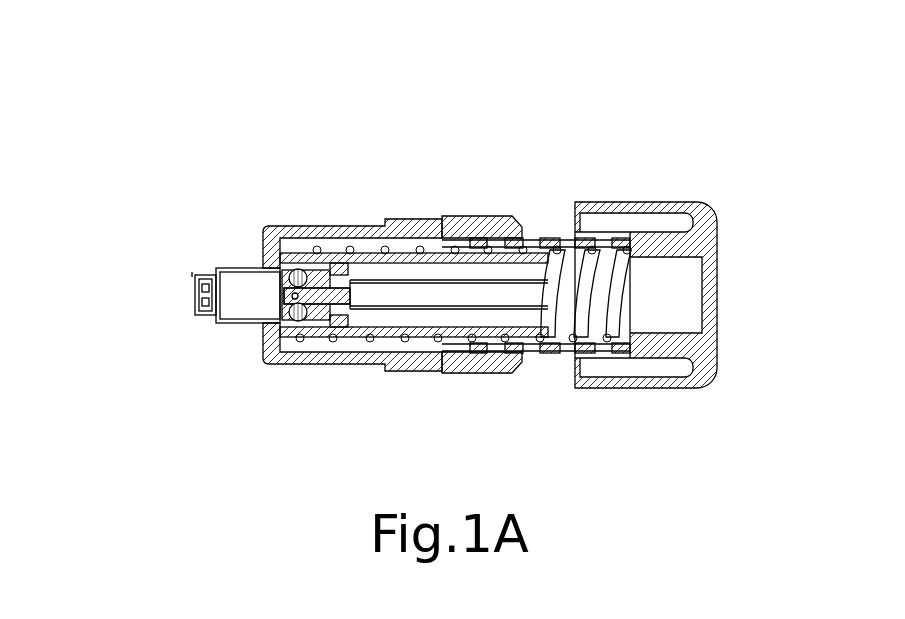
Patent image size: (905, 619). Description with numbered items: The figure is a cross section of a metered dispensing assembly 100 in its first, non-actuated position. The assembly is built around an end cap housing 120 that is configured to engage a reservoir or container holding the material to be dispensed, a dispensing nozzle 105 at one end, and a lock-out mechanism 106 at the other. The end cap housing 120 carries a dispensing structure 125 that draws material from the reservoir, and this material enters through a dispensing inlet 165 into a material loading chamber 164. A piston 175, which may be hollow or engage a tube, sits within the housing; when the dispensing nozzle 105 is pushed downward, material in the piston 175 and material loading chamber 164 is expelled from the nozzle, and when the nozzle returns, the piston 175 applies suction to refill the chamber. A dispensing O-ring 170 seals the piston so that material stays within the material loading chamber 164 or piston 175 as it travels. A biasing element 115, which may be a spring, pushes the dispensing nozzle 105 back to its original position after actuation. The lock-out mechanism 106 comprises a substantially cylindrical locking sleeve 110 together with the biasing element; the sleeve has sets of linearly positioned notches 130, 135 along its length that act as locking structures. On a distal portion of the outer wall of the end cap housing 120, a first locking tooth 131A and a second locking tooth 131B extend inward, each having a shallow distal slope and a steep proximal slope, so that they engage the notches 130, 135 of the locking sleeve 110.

The metered dispensing assembly 100 is at (269, 56).
The dispensing nozzle 105 is at (696, 271).
The lock-out mechanism 106 is at (558, 220).
The locking sleeve 110 is at (689, 218).
The biasing element 115 is at (242, 342).
The end cap housing 120 is at (389, 263).
The dispensing structure 125 is at (181, 268).
The notches 130 is at (486, 132).
The first locking tooth 131A is at (392, 184).
The second locking tooth 131B is at (364, 408).
The notches 135 is at (642, 418).
The material loading chamber 164 is at (156, 259).
The dispensing inlet 165 is at (200, 294).
The dispensing O-ring 170 is at (235, 336).
The piston 175 is at (228, 303).